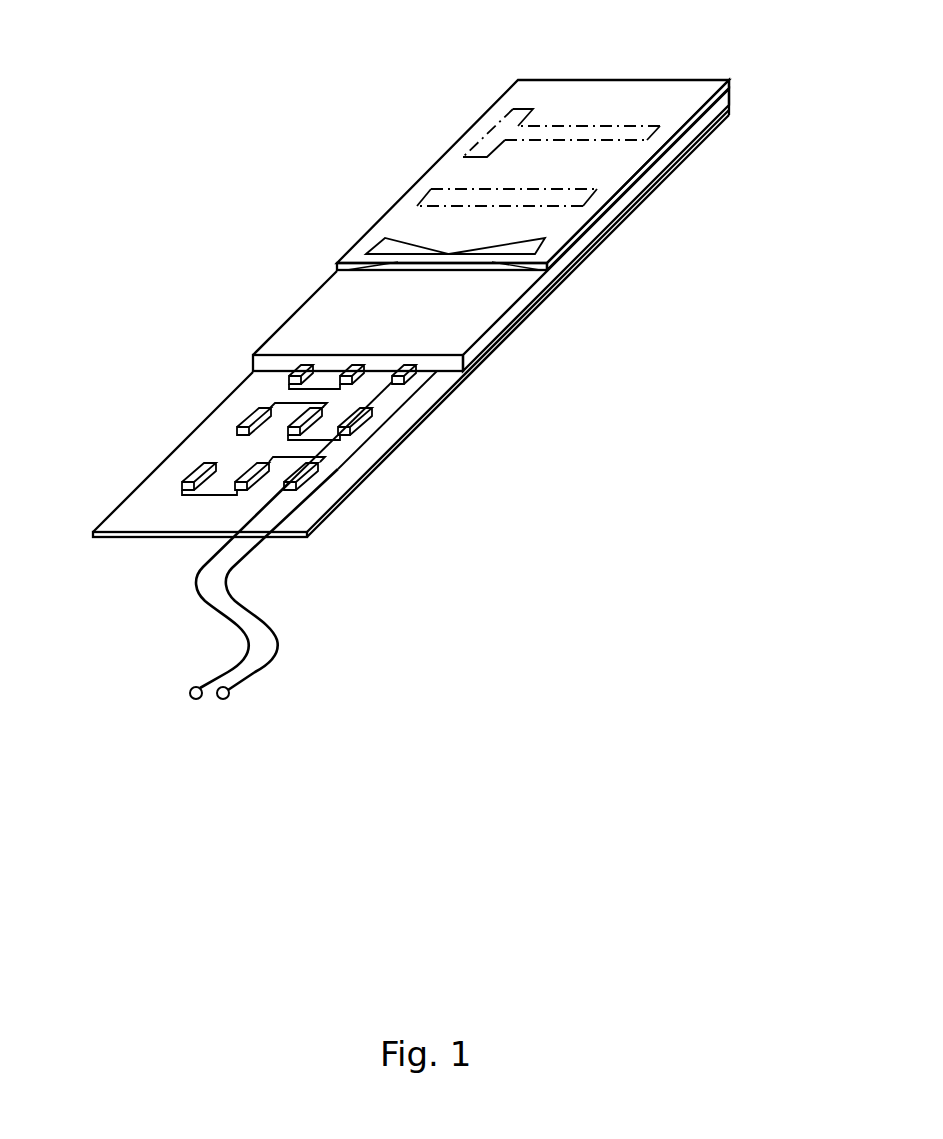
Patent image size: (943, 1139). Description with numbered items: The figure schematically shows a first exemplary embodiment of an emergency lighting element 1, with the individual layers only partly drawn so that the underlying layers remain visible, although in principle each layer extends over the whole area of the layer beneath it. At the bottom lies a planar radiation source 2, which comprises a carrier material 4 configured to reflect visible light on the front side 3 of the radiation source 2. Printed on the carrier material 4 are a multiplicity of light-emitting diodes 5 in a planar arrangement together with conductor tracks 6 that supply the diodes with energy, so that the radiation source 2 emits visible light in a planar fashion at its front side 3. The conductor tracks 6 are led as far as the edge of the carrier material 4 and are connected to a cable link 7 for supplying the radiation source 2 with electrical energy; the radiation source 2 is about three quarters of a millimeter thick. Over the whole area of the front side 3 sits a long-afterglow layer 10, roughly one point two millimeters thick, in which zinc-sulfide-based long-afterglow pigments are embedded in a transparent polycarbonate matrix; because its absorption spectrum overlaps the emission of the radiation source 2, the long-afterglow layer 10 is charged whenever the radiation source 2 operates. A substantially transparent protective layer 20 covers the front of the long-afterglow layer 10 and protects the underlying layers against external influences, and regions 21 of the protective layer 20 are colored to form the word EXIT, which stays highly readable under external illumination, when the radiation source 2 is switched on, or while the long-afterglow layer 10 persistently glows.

The emergency lighting element 1 is at (268, 176).
The planar radiation source 2 is at (131, 486).
The front side 3 is at (206, 437).
The carrier material 4 is at (130, 522).
The light-emitting diodes 5 is at (250, 418).
The conductor tracks 6 is at (212, 494).
The cable link 7 is at (272, 630).
The long-afterglow layer 10 is at (318, 327).
The protective layer 20 is at (572, 222).
The regions 21 is at (508, 128).